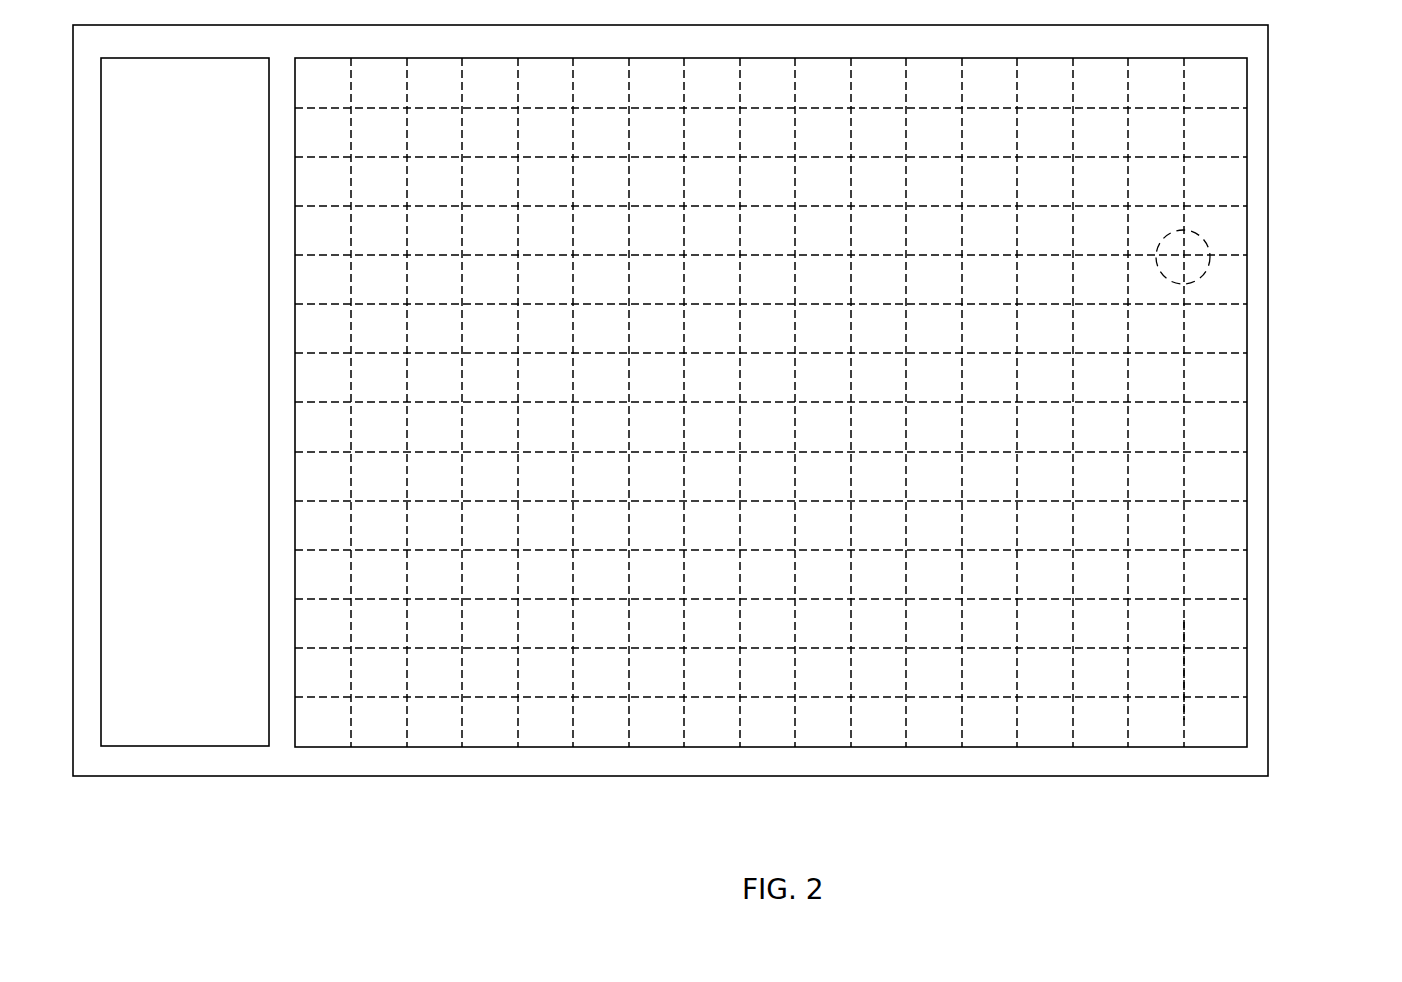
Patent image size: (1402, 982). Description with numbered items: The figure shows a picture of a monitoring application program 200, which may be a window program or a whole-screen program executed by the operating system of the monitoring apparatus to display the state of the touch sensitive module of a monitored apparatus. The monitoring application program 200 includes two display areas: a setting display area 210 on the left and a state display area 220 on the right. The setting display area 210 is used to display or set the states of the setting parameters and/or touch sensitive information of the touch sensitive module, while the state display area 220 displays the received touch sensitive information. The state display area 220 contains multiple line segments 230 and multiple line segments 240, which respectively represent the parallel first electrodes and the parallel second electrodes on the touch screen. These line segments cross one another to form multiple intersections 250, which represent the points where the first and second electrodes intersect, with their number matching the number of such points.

The monitoring application program 200 is at (1268, 175).
The setting display area 210 is at (200, 412).
The state display area 220 is at (1247, 414).
The line segments 230 is at (1212, 547).
The line segments 240 is at (1185, 664).
The intersections 250 is at (1205, 272).